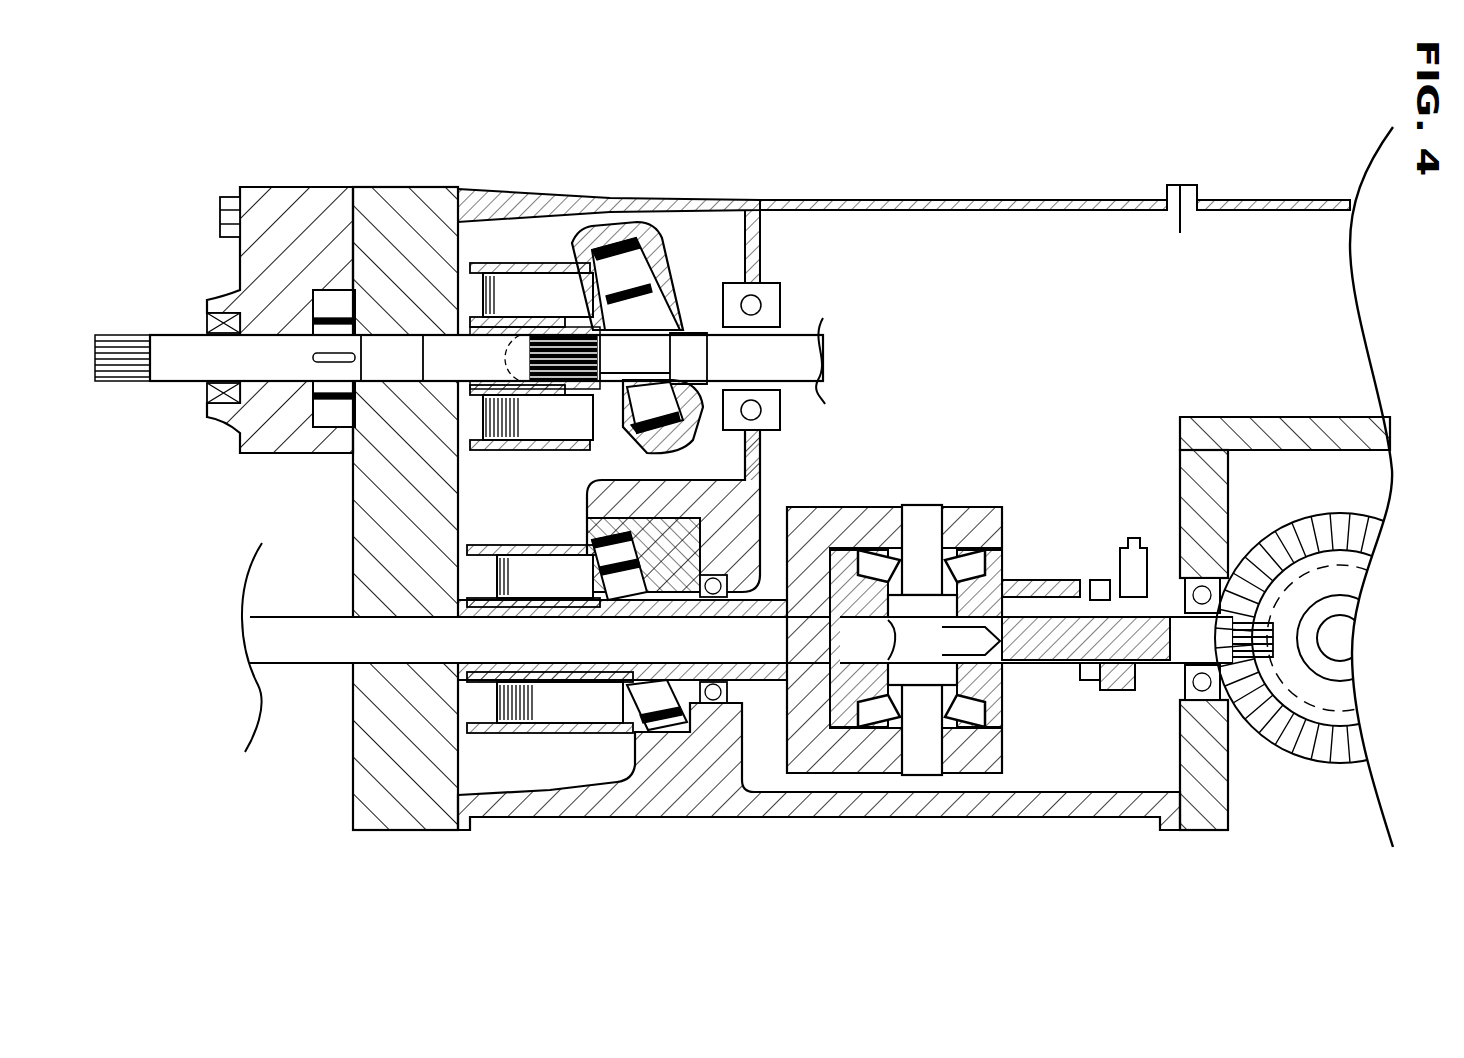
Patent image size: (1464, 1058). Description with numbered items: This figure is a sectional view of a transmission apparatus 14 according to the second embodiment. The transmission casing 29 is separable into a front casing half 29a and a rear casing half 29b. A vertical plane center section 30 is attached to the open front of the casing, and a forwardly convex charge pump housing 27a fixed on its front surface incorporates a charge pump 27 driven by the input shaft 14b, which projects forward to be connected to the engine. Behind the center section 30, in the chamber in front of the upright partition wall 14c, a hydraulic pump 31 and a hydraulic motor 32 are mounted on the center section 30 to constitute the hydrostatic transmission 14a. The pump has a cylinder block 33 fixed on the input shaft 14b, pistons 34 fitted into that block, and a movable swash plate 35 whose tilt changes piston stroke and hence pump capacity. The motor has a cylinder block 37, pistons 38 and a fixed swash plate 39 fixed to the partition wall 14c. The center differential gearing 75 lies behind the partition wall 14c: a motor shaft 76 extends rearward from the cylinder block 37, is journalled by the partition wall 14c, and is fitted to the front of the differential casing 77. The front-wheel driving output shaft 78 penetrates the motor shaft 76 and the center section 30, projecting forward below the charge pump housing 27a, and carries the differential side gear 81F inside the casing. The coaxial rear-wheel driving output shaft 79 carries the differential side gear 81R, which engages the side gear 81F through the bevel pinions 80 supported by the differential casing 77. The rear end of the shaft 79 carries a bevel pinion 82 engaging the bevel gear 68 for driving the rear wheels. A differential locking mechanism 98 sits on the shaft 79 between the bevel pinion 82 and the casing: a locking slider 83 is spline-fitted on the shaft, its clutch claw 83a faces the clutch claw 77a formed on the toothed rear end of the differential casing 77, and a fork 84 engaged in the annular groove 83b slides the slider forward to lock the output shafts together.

The transmission apparatus 14 is at (465, 445).
The hydrostatic transmission 14a is at (688, 245).
The input shaft 14b is at (122, 335).
The partition wall 14c is at (793, 428).
The charge pump 27 is at (323, 290).
The charge pump housing 27a is at (258, 187).
The transmission casing 29 is at (1182, 185).
The front casing half 29a is at (858, 200).
The rear casing half 29b is at (1285, 200).
The center section 30 is at (393, 187).
The hydraulic pump 31 is at (529, 318).
The hydraulic motor 32 is at (512, 762).
The cylinder block 33 is at (496, 430).
The pistons 34 is at (565, 433).
The movable swash plate 35 is at (650, 283).
The cylinder block 37 is at (490, 548).
The pistons 38 is at (540, 560).
The fixed swash plate 39 is at (640, 720).
The bevel gear 68 is at (1302, 752).
The center differential gearing 75 is at (1009, 624).
The motor shaft 76 is at (760, 682).
The differential casing 77 is at (933, 613).
The clutch claw 77a is at (1060, 580).
The front-wheel driving output shaft 78 is at (684, 656).
The rear-wheel driving output shaft 79 is at (1040, 663).
The bevel pinions 80 is at (932, 530).
The differential side gear 81F is at (845, 728).
The differential side gear 81R is at (985, 728).
The bevel pinion 82 is at (1235, 705).
The locking slider 83 is at (1135, 690).
The clutch claw 83a is at (1098, 580).
The annular groove 83b is at (1110, 682).
The fork 84 is at (1135, 540).
The differential locking mechanism 98 is at (1107, 600).